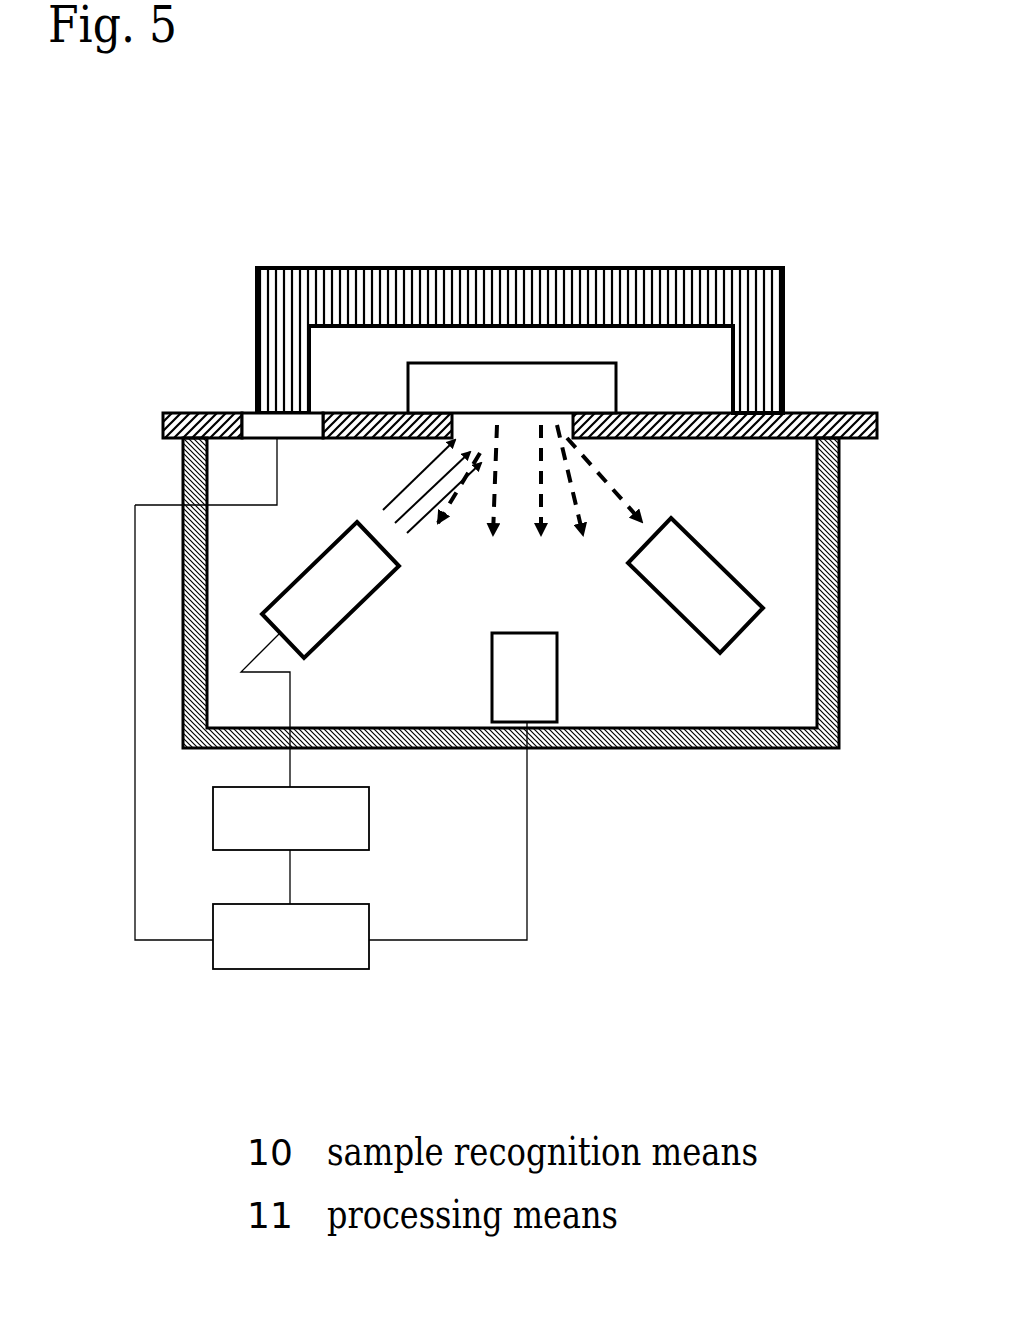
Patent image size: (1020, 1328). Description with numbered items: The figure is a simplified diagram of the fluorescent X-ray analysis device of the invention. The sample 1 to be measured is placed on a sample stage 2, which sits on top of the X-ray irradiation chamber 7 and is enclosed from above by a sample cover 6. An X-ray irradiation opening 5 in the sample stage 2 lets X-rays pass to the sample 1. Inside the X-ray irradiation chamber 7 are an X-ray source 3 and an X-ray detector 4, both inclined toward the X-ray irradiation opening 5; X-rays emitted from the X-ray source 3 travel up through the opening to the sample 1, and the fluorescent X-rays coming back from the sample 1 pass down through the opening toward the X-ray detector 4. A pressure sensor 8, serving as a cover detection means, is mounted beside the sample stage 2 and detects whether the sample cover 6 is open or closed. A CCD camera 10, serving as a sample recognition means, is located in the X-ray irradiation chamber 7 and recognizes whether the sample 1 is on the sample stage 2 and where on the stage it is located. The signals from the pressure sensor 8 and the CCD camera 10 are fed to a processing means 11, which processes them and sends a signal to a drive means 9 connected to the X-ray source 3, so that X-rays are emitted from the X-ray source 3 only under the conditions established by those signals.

The sample 1 is at (590, 377).
The sample stage 2 is at (672, 413).
The X-ray source 3 is at (330, 593).
The X-ray detector 4 is at (707, 593).
The X-ray irradiation opening 5 is at (473, 428).
The sample cover 6 is at (408, 299).
The X-ray irradiation chamber 7 is at (707, 696).
The pressure sensor 8 is at (265, 428).
The drive means 9 is at (263, 823).
The CCD camera 10 is at (526, 696).
The processing means 11 is at (277, 938).